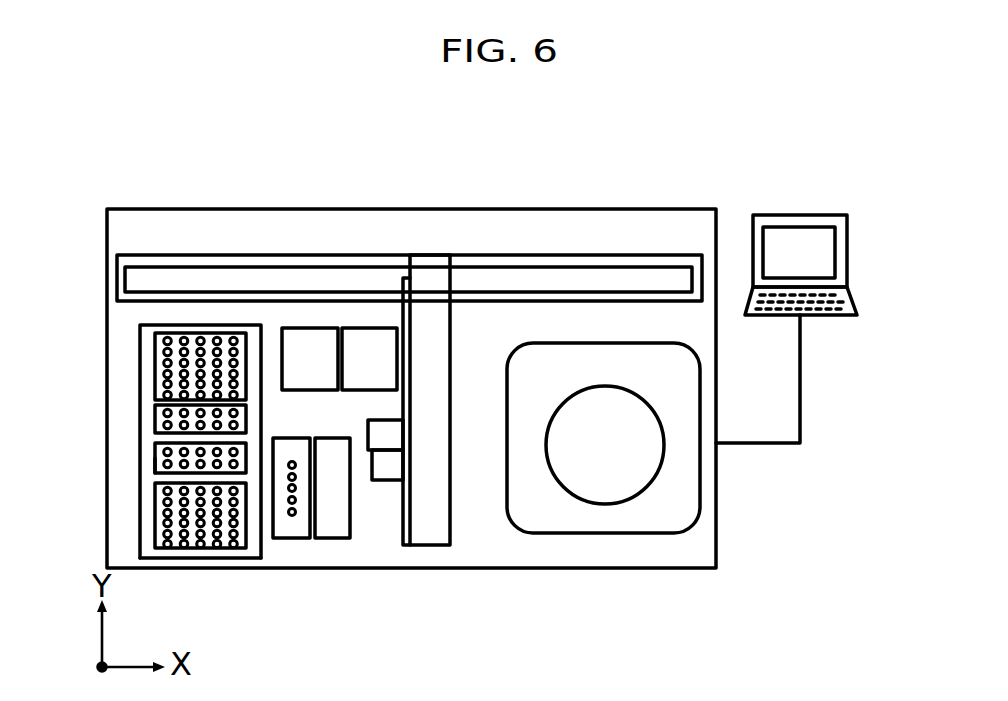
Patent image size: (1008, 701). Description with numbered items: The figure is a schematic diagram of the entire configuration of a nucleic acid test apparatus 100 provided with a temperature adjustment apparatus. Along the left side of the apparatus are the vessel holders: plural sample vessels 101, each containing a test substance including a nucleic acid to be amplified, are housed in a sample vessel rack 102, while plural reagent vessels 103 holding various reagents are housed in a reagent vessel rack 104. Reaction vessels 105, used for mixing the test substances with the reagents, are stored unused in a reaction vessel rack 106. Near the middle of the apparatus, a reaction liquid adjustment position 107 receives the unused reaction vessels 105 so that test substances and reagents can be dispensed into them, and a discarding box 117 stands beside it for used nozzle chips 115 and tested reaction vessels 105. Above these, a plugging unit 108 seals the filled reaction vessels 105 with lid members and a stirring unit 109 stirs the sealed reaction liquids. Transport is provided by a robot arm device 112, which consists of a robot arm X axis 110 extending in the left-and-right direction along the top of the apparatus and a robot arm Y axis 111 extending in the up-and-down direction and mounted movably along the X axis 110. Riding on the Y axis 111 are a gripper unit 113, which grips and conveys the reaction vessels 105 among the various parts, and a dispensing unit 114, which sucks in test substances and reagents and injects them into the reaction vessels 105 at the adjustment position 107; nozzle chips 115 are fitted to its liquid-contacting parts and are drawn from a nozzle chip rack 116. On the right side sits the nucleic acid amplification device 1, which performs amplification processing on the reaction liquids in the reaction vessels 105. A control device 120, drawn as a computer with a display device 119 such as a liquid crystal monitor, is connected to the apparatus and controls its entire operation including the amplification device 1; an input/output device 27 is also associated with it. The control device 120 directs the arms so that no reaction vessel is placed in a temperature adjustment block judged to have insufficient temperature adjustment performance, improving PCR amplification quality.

The nucleic acid amplification device 1 is at (547, 452).
The input/output device 27 is at (830, 316).
The nucleic acid test apparatus 100 is at (157, 203).
The sample vessels 101 is at (156, 419).
The sample vessel rack 102 is at (156, 446).
The reagent vessels 103 is at (160, 461).
The reagent vessel rack 104 is at (158, 484).
The reaction vessels 105 is at (159, 549).
The reaction vessel rack 106 is at (222, 549).
The reaction liquid adjustment position 107 is at (292, 539).
The plugging unit 108 is at (310, 328).
The stirring unit 109 is at (367, 328).
The robot arm X axis 110 is at (521, 272).
The robot arm Y axis 111 is at (446, 256).
The robot arm device 112 is at (585, 146).
The gripper unit 113 is at (378, 433).
The dispensing unit 114 is at (392, 481).
The nozzle chips 115 is at (156, 343).
The nozzle chip rack 116 is at (160, 375).
The discarding box 117 is at (330, 539).
The display device 119 is at (803, 214).
The control device 120 is at (805, 272).